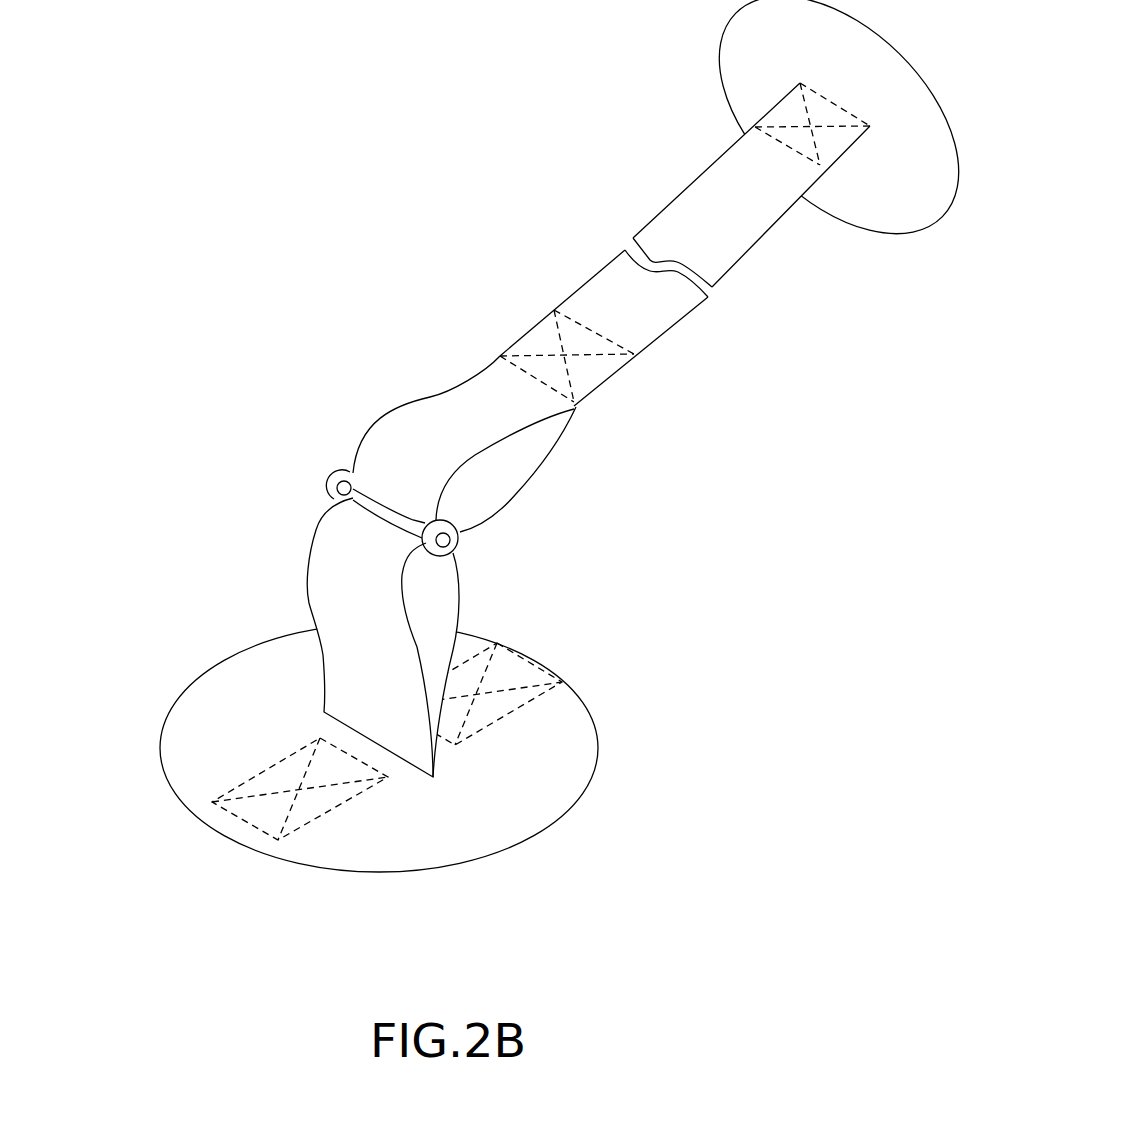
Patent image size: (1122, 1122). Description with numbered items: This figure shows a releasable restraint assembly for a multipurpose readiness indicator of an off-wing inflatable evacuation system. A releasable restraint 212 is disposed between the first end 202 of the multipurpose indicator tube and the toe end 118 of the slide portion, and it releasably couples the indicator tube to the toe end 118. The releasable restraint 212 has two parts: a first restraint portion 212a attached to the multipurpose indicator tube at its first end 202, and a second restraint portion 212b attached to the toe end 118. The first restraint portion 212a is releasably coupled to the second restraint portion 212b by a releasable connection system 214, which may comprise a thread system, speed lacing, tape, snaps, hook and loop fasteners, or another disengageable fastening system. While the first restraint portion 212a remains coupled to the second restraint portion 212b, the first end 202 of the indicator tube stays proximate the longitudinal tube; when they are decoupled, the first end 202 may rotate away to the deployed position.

The toe end 118 is at (737, 70).
The first end 202 is at (197, 758).
The releasable restraint 212 is at (346, 260).
The first restraint portion 212a is at (323, 605).
The second restraint portion 212b is at (472, 397).
The releasable connection system 214 is at (458, 543).